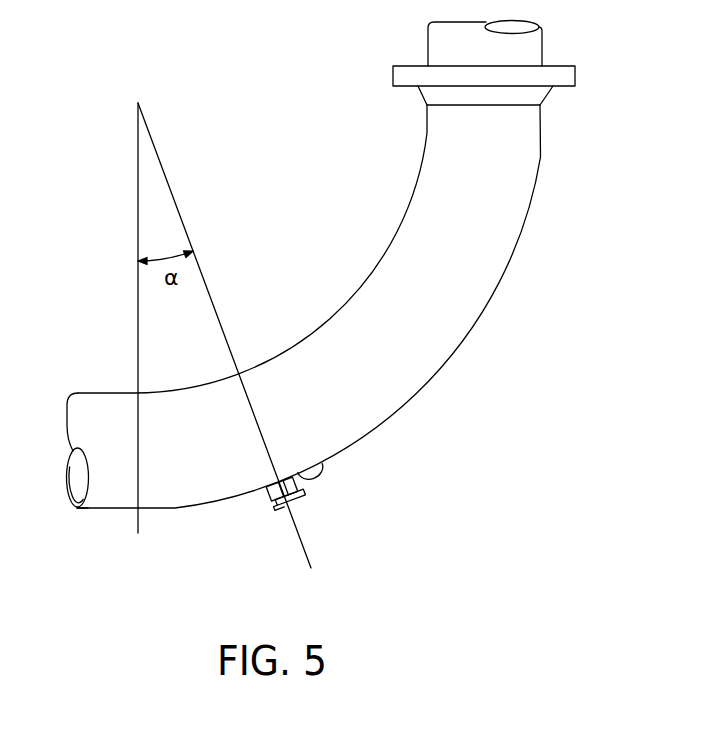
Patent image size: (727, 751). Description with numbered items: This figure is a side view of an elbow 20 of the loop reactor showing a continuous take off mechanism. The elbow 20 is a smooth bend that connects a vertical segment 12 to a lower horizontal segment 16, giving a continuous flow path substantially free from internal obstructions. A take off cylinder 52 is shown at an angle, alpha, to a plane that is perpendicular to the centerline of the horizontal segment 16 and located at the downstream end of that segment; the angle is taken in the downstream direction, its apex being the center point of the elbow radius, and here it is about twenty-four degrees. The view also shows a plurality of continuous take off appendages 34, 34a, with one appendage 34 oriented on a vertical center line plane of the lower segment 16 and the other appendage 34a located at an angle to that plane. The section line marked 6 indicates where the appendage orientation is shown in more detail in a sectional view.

The vertical segment 12 is at (466, 55).
The elbow 20 is at (340, 306).
The lower horizontal segment 16 is at (107, 510).
The continuous take off appendage 34 is at (305, 500).
The continuous take off appendage 34a is at (322, 472).
The take off cylinder 52 is at (318, 486).
The section line 6- 6 is at (224, 335).